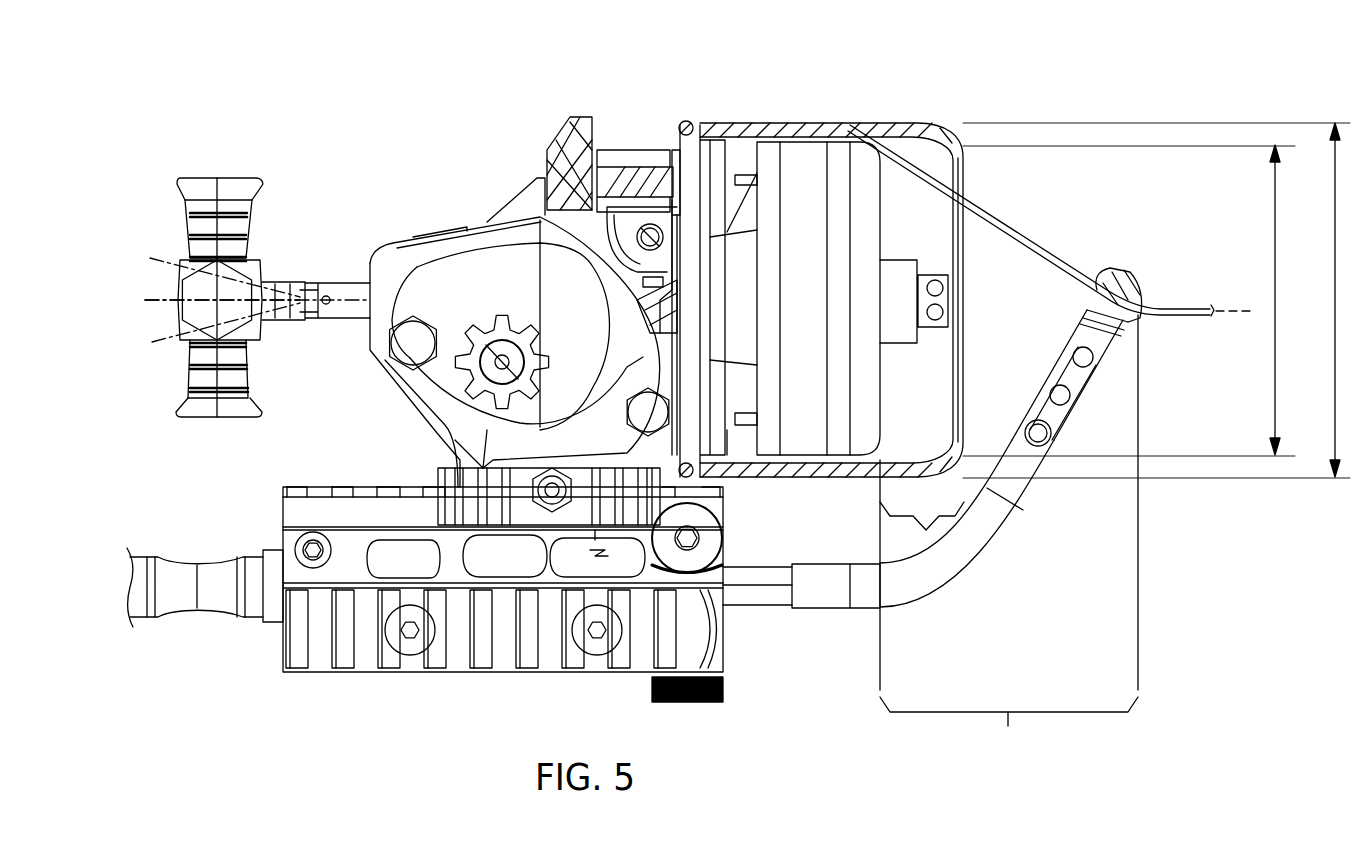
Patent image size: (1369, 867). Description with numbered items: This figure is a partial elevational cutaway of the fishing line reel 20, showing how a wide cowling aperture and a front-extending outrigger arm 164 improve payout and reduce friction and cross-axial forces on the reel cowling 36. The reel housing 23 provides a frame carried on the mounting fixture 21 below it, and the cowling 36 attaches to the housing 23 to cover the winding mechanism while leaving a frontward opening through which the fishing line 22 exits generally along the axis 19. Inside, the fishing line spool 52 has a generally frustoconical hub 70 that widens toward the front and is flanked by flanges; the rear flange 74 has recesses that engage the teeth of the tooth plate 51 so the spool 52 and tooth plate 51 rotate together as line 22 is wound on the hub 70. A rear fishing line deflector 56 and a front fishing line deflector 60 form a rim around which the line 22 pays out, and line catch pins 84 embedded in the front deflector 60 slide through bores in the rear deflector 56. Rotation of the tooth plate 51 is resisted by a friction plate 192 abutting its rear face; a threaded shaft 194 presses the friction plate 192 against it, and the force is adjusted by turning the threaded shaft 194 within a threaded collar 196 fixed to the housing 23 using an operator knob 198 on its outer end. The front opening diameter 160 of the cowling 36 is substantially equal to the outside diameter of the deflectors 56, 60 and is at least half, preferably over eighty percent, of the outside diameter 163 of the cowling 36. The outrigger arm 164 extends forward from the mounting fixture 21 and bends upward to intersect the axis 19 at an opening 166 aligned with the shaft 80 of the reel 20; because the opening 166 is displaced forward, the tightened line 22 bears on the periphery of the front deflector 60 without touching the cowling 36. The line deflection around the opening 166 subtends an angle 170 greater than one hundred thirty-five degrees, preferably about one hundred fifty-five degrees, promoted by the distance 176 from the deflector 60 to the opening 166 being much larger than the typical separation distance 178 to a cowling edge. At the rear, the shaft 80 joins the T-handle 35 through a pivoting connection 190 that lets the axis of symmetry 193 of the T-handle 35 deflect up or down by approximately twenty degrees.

The axis 19 is at (1232, 310).
The fishing line reel 20 is at (555, 108).
The mounting fixture 21 is at (722, 518).
The fishing line 22 is at (1200, 318).
The reel housing 23 is at (452, 265).
The T-handle 35 is at (245, 200).
The reel cowling 36 is at (825, 125).
The tooth plate 51 is at (675, 318).
The fishing line spool 52 is at (742, 440).
The rear fishing line deflector 56 is at (808, 400).
The front fishing line deflector 60 is at (865, 410).
The hub 70 is at (742, 262).
The rear flange 74 is at (710, 140).
The shaft 80 is at (358, 292).
The line catch pin 84 is at (748, 186).
The front opening diameter 160 is at (1129, 300).
The outside diameter of the cowling 163 is at (1159, 300).
The outrigger arm 164 is at (1023, 493).
The opening 166 is at (1125, 322).
The angle 170 is at (1197, 302).
The distance 176 is at (1009, 537).
The separation distance 178 is at (930, 532).
The pivoting connection 190 is at (330, 305).
The friction plate 192 is at (668, 150).
The axis of symmetry 193 is at (158, 300).
The threaded shaft 194 is at (650, 155).
The threaded collar 196 is at (622, 150).
The operator knob 198 is at (560, 150).